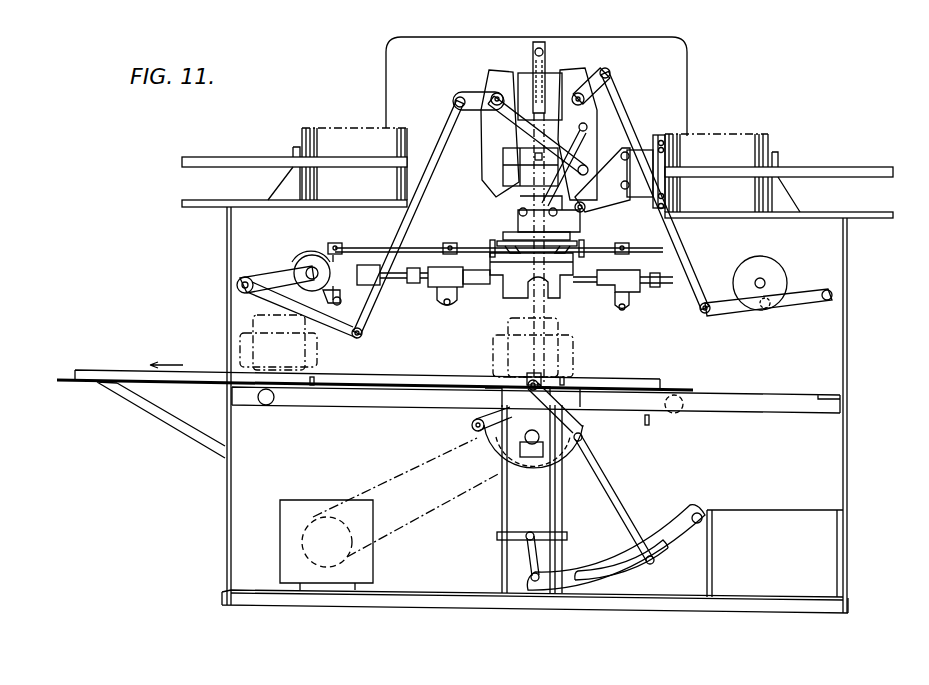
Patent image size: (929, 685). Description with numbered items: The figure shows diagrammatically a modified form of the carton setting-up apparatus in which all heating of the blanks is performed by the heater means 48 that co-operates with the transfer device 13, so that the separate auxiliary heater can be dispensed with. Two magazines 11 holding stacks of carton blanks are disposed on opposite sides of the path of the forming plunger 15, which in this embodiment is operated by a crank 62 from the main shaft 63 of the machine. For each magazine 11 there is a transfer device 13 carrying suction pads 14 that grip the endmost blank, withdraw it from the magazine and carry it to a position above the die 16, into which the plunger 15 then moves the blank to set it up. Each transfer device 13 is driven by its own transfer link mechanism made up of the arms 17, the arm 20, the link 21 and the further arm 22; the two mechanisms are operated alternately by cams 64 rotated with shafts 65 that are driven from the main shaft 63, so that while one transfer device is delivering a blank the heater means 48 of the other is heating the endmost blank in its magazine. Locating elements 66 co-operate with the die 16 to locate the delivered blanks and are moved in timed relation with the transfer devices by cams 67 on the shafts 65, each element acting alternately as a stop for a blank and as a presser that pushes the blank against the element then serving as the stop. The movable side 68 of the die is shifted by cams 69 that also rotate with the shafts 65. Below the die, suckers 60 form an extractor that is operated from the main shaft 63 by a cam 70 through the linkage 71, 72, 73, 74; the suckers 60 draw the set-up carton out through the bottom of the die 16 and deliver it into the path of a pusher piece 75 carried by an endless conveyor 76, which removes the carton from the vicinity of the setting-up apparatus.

The magazine 11 is at (336, 115).
The transfer device 13 is at (655, 150).
The suction pads 14 is at (675, 177).
The forming plunger 15 is at (517, 177).
The die 16 is at (550, 287).
The arms 17 is at (590, 108).
The arm 20 is at (480, 90).
The link 21 is at (448, 123).
The further arm 22 is at (335, 325).
The heater means 48 is at (663, 135).
The suckers 60 is at (540, 387).
The crank 62 is at (573, 413).
The main shaft 63 is at (528, 440).
The cams 64 is at (317, 252).
The shafts 65 is at (310, 275).
The locating elements 66 is at (487, 240).
The cams 67 is at (340, 298).
The movable side 68 is at (505, 292).
The cams 69 is at (303, 253).
The cam 70 is at (535, 467).
The linkage 71 is at (477, 433).
The linkage 72 is at (615, 488).
The linkage 73 is at (678, 535).
The linkage 74 is at (540, 557).
The pusher piece 75 is at (312, 380).
The endless conveyor 76 is at (290, 405).